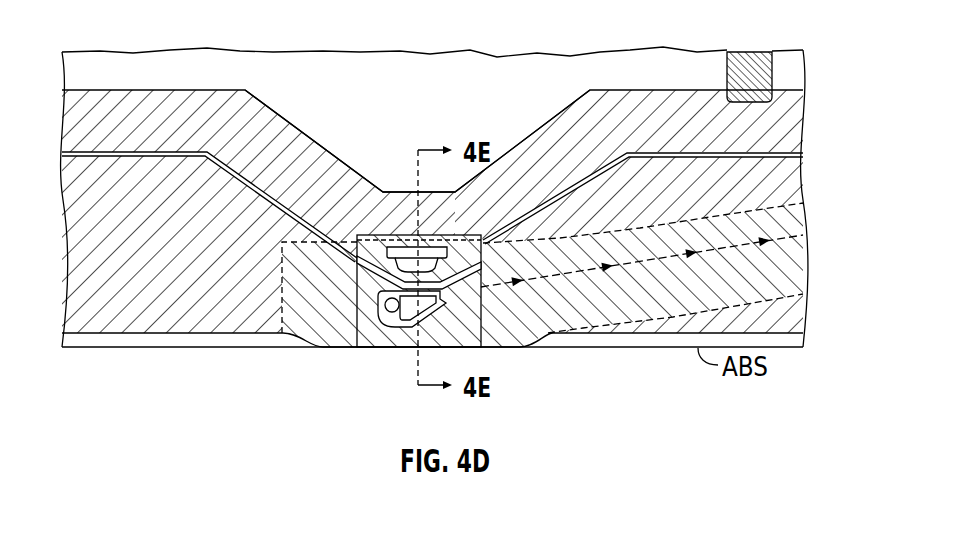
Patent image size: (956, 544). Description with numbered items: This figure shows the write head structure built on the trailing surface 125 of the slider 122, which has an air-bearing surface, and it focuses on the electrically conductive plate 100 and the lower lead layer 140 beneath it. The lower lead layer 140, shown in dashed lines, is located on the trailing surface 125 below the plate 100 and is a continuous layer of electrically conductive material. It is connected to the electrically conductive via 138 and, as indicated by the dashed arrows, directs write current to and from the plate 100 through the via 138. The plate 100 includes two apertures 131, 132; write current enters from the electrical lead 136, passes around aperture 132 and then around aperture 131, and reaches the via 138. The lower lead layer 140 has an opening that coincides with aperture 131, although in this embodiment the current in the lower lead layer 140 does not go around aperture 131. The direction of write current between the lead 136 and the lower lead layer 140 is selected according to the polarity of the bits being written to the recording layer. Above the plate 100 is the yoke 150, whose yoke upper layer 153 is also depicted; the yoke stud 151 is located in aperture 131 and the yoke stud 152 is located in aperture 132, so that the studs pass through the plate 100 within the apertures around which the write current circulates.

The electrically conductive plate 100 is at (157, 103).
The trailing surface 125 is at (497, 63).
The slider 122 is at (623, 53).
The electrical lead 136 is at (750, 62).
The yoke 150 is at (387, 242).
The aperture 132 is at (476, 240).
The yoke stud 152 is at (410, 248).
The yoke stud 151 is at (470, 320).
The aperture 131 is at (423, 310).
The electrically conductive via 138 is at (390, 312).
The lower lead layer 140 is at (580, 303).
The yoke upper layer 153 is at (642, 261).